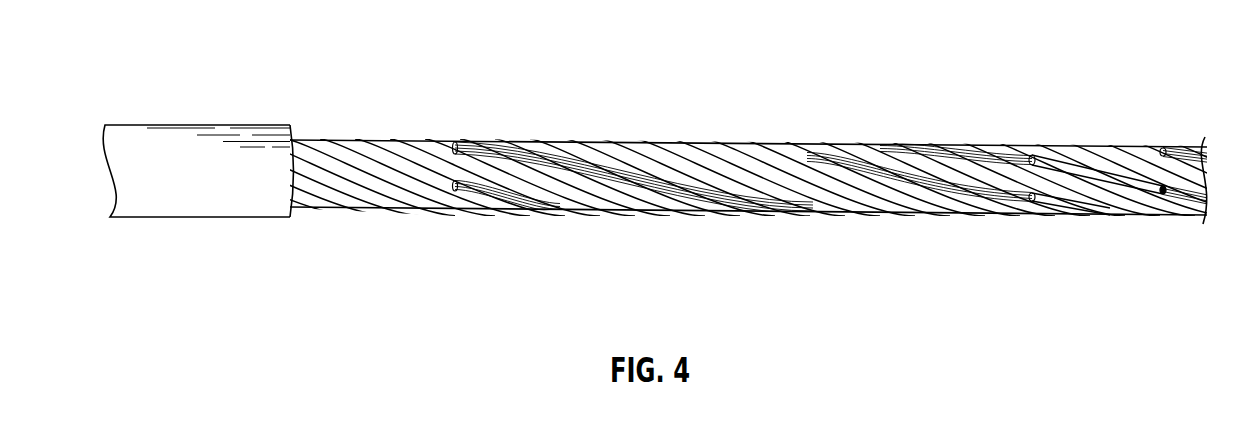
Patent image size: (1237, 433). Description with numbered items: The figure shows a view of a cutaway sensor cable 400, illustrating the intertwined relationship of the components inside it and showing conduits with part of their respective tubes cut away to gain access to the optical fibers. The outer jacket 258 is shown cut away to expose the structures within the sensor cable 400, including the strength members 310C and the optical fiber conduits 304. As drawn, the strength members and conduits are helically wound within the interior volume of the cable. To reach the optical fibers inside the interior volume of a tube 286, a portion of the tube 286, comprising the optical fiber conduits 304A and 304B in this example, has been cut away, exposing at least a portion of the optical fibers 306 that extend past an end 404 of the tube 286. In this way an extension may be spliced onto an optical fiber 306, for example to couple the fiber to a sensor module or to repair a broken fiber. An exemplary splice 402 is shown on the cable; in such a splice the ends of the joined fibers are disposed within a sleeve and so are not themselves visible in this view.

The sensor cable 400 is at (1149, 86).
The outer jacket 258 is at (158, 142).
The tube 286 is at (352, 162).
The optical fiber conduits 304 is at (323, 247).
The optical fiber conduit 304A is at (449, 136).
The optical fiber conduit 304B is at (411, 190).
The optical fibers 306 is at (536, 205).
The strength members 310C is at (433, 158).
The splice 402 is at (1092, 177).
The end of the tube 404 is at (456, 204).